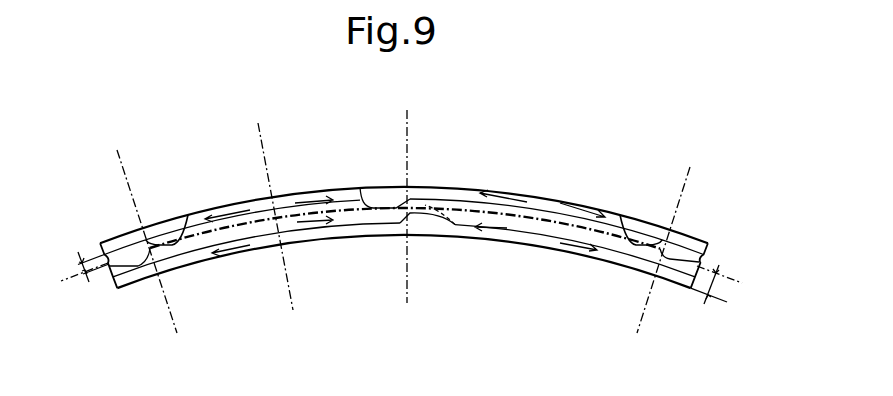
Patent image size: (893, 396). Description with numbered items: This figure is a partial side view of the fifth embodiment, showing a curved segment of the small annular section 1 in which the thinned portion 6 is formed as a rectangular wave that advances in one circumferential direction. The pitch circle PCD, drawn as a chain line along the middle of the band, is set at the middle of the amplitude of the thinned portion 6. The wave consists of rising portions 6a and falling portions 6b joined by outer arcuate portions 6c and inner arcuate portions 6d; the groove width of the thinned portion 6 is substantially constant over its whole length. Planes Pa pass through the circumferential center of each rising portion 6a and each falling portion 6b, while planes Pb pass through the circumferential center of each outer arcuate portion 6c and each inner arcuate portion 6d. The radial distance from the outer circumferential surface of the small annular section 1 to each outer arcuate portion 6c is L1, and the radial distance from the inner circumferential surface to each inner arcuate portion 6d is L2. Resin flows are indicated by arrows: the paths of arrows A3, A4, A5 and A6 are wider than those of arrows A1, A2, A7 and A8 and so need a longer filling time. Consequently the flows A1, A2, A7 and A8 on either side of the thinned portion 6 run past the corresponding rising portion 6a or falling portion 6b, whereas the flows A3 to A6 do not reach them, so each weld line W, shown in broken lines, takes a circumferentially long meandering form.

The small annular section 1 is at (714, 202).
The thinned portion 6 is at (673, 283).
The rising portion 6a is at (412, 215).
The falling portion 6b is at (152, 254).
The outer arcuate portion 6c is at (507, 214).
The inner arcuate portion 6d is at (281, 234).
The weld line W is at (173, 228).
The plane Pa is at (125, 183).
The plane Pb is at (267, 157).
The pitch circle diameter PCD is at (426, 247).
The radial distance L1 is at (79, 256).
The radial distance L2 is at (706, 300).
The flow arrow A1 is at (582, 196).
The flow arrow A2 is at (503, 182).
The flow arrow A3 is at (578, 264).
The flow arrow A4 is at (491, 248).
The flow arrow A5 is at (315, 181).
The flow arrow A6 is at (227, 198).
The flow arrow A7 is at (320, 244).
The flow arrow A8 is at (231, 267).